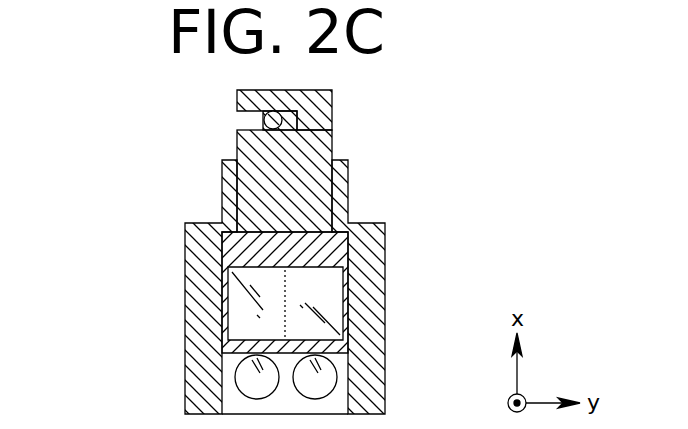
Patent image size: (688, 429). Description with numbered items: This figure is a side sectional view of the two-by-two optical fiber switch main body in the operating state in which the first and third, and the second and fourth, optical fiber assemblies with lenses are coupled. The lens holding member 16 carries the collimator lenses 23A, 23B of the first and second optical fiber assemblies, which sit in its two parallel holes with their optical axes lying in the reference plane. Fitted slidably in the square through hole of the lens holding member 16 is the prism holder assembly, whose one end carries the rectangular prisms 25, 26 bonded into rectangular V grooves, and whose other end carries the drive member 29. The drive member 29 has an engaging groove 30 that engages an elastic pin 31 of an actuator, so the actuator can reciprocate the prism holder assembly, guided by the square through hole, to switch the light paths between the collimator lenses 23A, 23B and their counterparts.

The lens holding member 16 is at (372, 275).
The drive member 29 is at (323, 192).
The elastic pin 31 is at (294, 118).
The engaging groove 30 is at (266, 121).
The rectangular prism 25 is at (236, 310).
The rectangular prism 26 is at (215, 292).
The collimator lens 23B is at (243, 382).
The collimator lens 23A is at (321, 383).